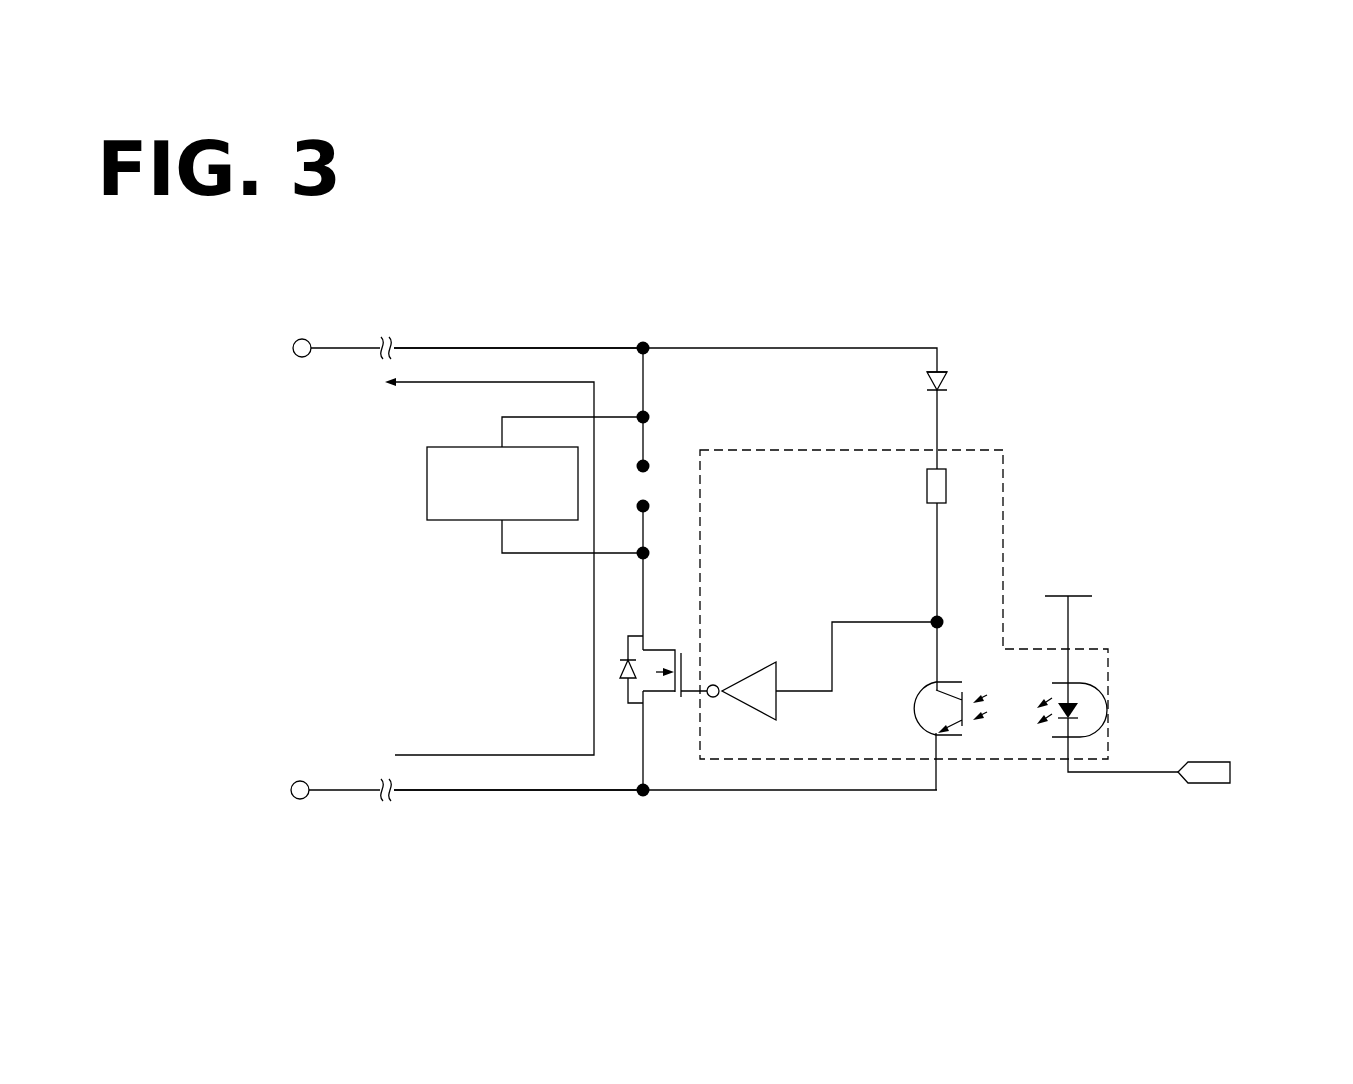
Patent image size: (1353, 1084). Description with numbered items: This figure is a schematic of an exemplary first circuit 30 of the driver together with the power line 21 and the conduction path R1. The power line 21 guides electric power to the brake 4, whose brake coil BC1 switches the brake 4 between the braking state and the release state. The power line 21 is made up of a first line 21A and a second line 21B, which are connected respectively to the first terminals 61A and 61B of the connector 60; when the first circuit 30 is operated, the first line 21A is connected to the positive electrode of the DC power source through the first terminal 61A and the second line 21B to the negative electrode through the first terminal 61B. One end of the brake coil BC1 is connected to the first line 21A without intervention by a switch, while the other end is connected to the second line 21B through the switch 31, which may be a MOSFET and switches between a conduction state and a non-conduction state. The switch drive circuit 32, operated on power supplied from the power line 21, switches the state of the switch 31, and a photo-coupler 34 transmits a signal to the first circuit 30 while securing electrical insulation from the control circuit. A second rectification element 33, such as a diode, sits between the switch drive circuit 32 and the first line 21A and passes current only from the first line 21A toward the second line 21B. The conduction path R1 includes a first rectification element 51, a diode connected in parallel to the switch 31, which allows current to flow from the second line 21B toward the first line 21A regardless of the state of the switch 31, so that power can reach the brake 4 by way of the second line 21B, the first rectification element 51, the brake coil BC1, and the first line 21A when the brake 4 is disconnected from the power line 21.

The brake 4 is at (481, 510).
The brake coil BC1 is at (458, 521).
The power line 21 is at (567, 330).
The first line 21A is at (458, 346).
The second line 21B is at (488, 793).
The first circuit 30 is at (1003, 517).
The switch 31 is at (659, 636).
The switch drive circuit 32 is at (1003, 481).
The second rectification element 33 is at (957, 368).
The photo-coupler 34 is at (920, 723).
The first rectification element 51 is at (621, 697).
The connector 60 is at (260, 531).
The first terminal 61A is at (296, 357).
The first terminal 61B is at (295, 798).
The conduction path R1 is at (594, 618).